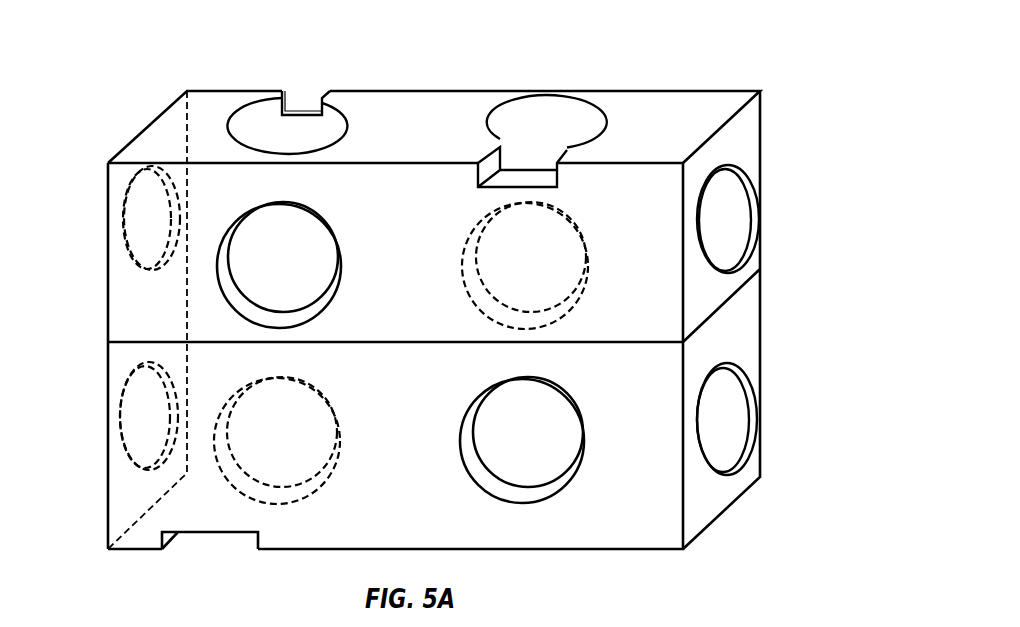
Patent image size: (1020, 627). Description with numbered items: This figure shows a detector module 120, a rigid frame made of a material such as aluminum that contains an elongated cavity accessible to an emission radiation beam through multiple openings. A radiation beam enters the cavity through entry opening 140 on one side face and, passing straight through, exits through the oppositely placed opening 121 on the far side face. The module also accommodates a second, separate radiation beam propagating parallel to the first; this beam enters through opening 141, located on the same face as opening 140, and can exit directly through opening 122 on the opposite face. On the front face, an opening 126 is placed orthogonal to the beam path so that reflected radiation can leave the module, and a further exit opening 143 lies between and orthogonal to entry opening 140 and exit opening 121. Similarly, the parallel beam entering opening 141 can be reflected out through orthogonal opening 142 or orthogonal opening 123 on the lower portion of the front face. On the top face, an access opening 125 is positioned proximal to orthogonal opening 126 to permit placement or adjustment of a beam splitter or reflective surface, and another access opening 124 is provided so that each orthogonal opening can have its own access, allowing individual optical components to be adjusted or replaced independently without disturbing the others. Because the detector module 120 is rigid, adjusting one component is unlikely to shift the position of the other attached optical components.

The detector module 120 is at (678, 108).
The exit opening 121 is at (730, 230).
The exit opening 122 is at (733, 420).
The orthogonal opening 123 is at (547, 420).
The top keyhole opening 124 is at (553, 125).
The access opening 125 is at (297, 128).
The orthogonal opening 126 is at (297, 237).
The entry opening 140 is at (152, 212).
The entry opening 141 is at (152, 422).
The orthogonal opening 142 is at (293, 420).
The exit opening 143 is at (550, 243).